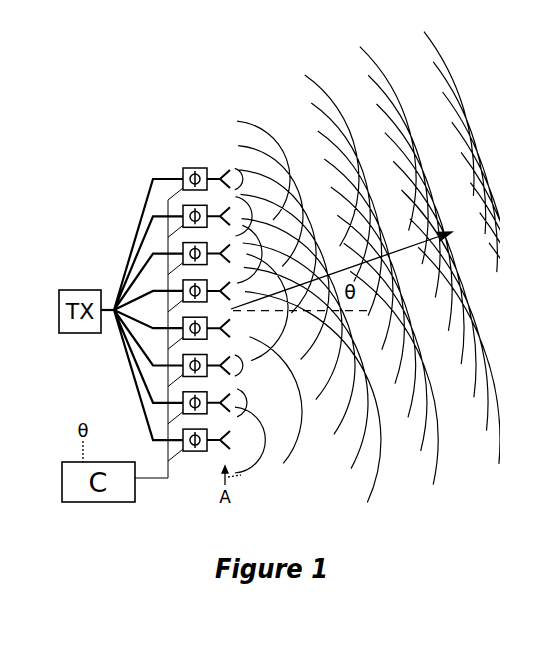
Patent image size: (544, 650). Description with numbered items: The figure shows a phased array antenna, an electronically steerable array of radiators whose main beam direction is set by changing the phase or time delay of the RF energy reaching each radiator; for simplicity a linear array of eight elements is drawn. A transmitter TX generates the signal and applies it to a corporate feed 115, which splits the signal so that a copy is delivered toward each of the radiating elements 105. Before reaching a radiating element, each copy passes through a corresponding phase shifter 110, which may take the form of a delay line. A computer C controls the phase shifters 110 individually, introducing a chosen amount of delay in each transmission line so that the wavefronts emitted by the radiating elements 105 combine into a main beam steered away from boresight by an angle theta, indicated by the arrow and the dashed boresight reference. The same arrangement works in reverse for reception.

The radiating elements 105 is at (222, 170).
The phase shifter 110 is at (188, 174).
The corporate feed 115 is at (123, 262).